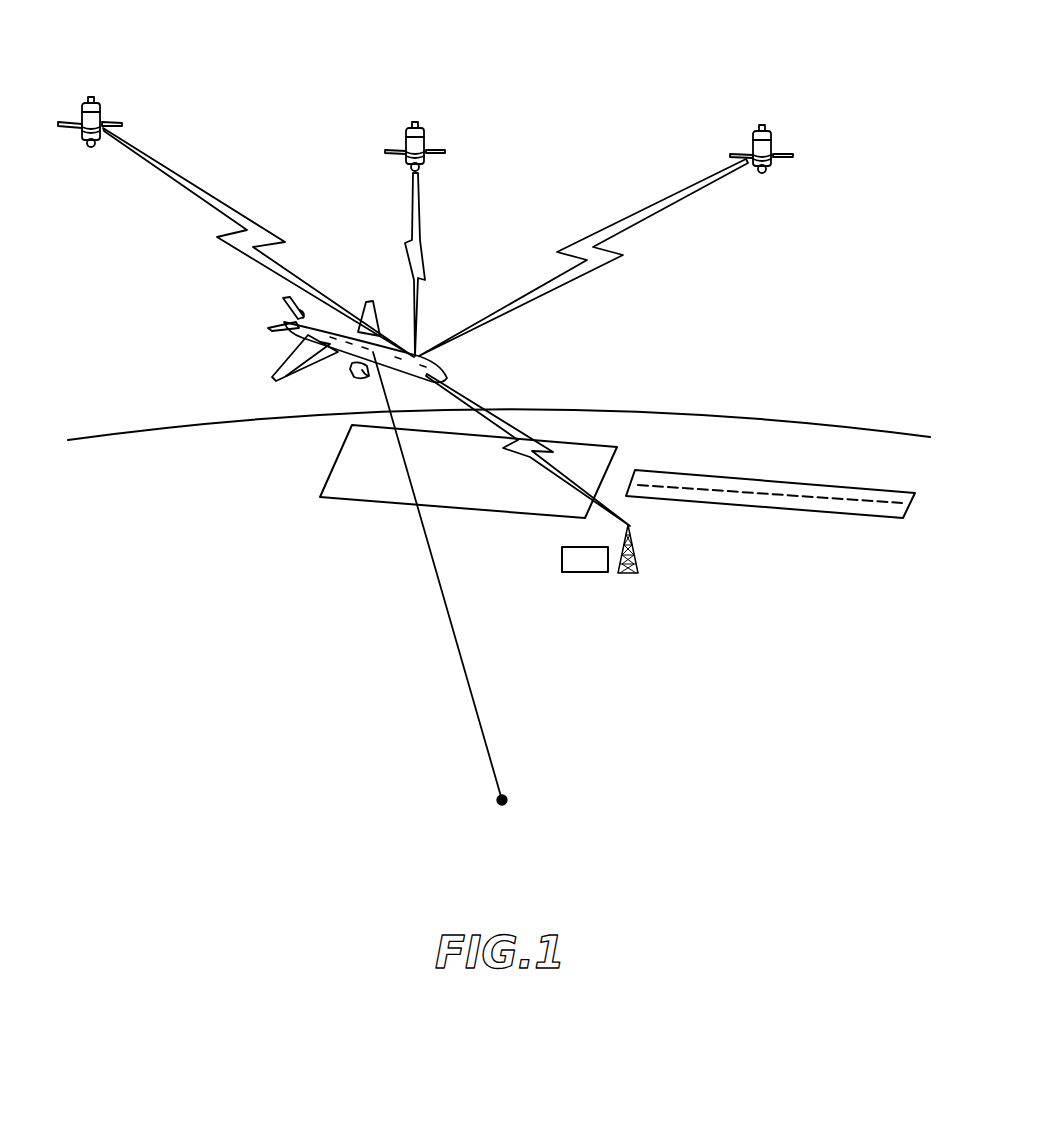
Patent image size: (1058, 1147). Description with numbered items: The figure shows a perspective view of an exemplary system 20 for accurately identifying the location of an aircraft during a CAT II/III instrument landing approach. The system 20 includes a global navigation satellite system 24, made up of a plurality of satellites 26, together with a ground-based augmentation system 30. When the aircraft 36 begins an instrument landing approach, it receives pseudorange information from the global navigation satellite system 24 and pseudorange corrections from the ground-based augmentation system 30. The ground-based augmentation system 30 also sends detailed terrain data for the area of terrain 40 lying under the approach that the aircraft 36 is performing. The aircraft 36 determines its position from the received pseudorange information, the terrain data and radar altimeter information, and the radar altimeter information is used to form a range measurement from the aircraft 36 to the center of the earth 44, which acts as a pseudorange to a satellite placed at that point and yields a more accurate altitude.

The system 20 is at (849, 62).
The global navigation satellite system 24 is at (101, 103).
The satellites 26 is at (112, 124).
The ground-based augmentation system 30 is at (573, 570).
The aircraft 36 is at (438, 369).
The area of terrain 40 is at (348, 498).
The center of the earth 44 is at (506, 797).